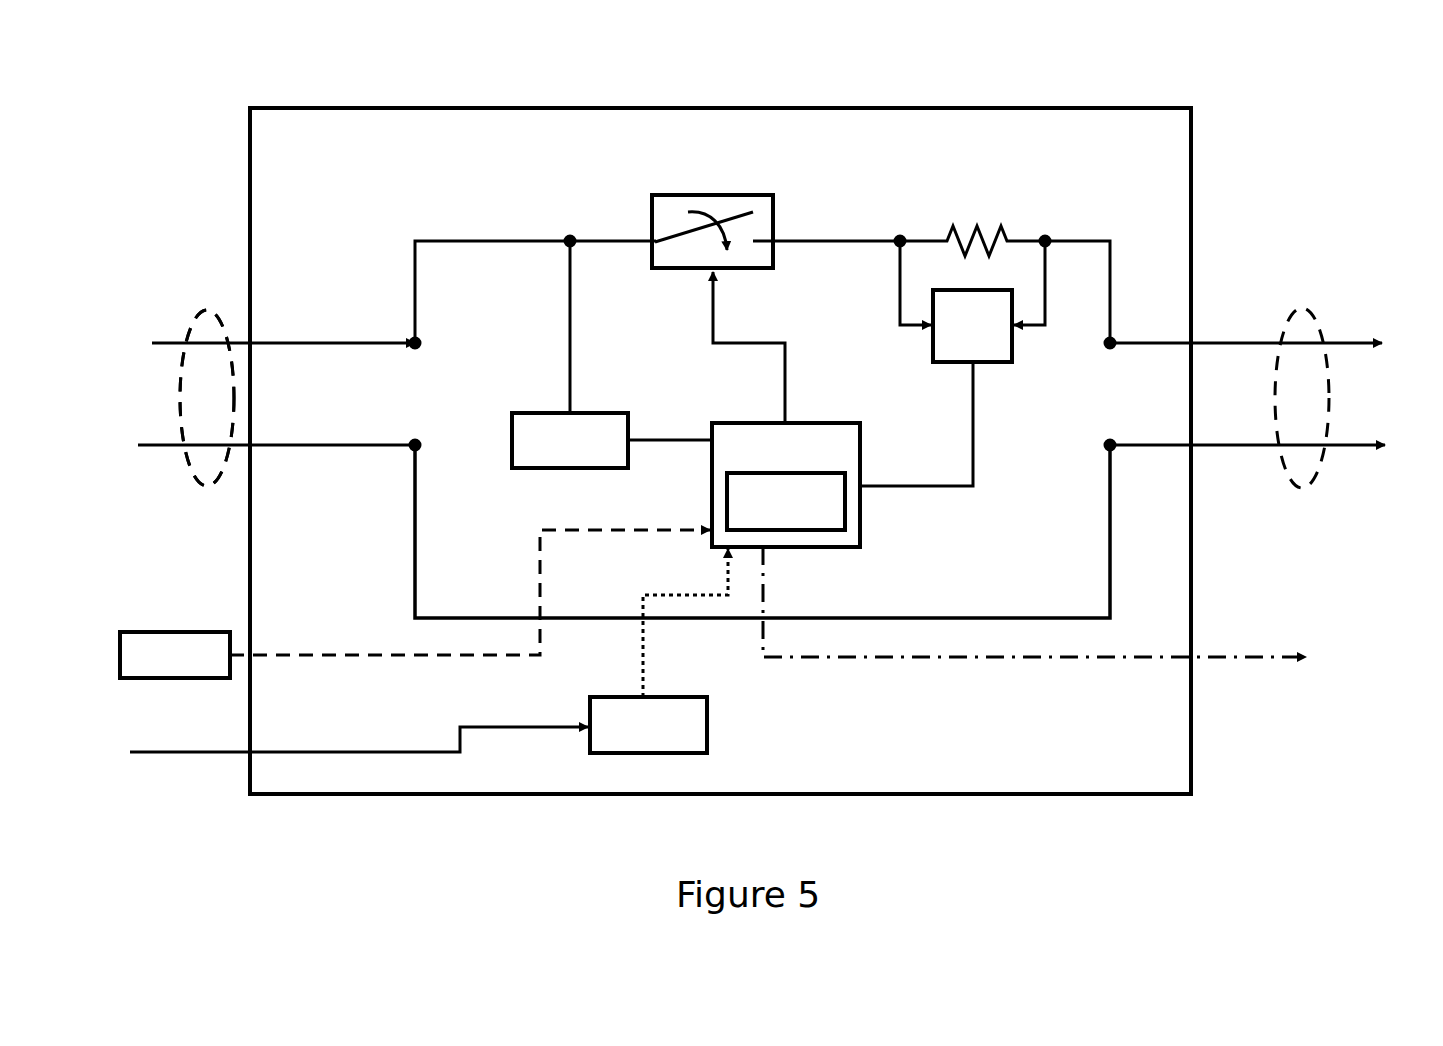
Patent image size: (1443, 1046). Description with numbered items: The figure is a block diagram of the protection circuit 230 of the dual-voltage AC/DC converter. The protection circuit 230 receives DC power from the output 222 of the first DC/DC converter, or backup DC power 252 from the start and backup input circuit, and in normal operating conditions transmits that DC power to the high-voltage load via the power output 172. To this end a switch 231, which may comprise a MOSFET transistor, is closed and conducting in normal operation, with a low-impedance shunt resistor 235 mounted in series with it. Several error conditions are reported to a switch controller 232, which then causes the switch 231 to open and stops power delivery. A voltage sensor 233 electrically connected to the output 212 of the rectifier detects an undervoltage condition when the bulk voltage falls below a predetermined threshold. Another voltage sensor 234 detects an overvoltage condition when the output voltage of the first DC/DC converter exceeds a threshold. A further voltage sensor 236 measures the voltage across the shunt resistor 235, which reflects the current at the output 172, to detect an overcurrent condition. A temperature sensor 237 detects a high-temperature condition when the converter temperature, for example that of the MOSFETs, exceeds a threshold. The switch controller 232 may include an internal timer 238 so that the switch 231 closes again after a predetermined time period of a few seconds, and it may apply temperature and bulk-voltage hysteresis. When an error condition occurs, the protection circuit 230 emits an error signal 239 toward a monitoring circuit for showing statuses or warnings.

The protection circuit 230 is at (923, 108).
The switch 231 is at (711, 193).
The switch controller 232 is at (862, 512).
The voltage sensor 233 is at (707, 727).
The voltage sensor 234 is at (562, 470).
The shunt resistor 235 is at (977, 218).
The voltage sensor 236 is at (956, 362).
The temperature sensor 237 is at (173, 632).
The internal timer 238 is at (727, 500).
The error signal 239 is at (1228, 657).
The output of the rectifier 212 is at (222, 752).
The output of the first DC/DC converter 222 is at (214, 305).
The backup DC power 252 is at (207, 398).
The power output 172 is at (1303, 305).